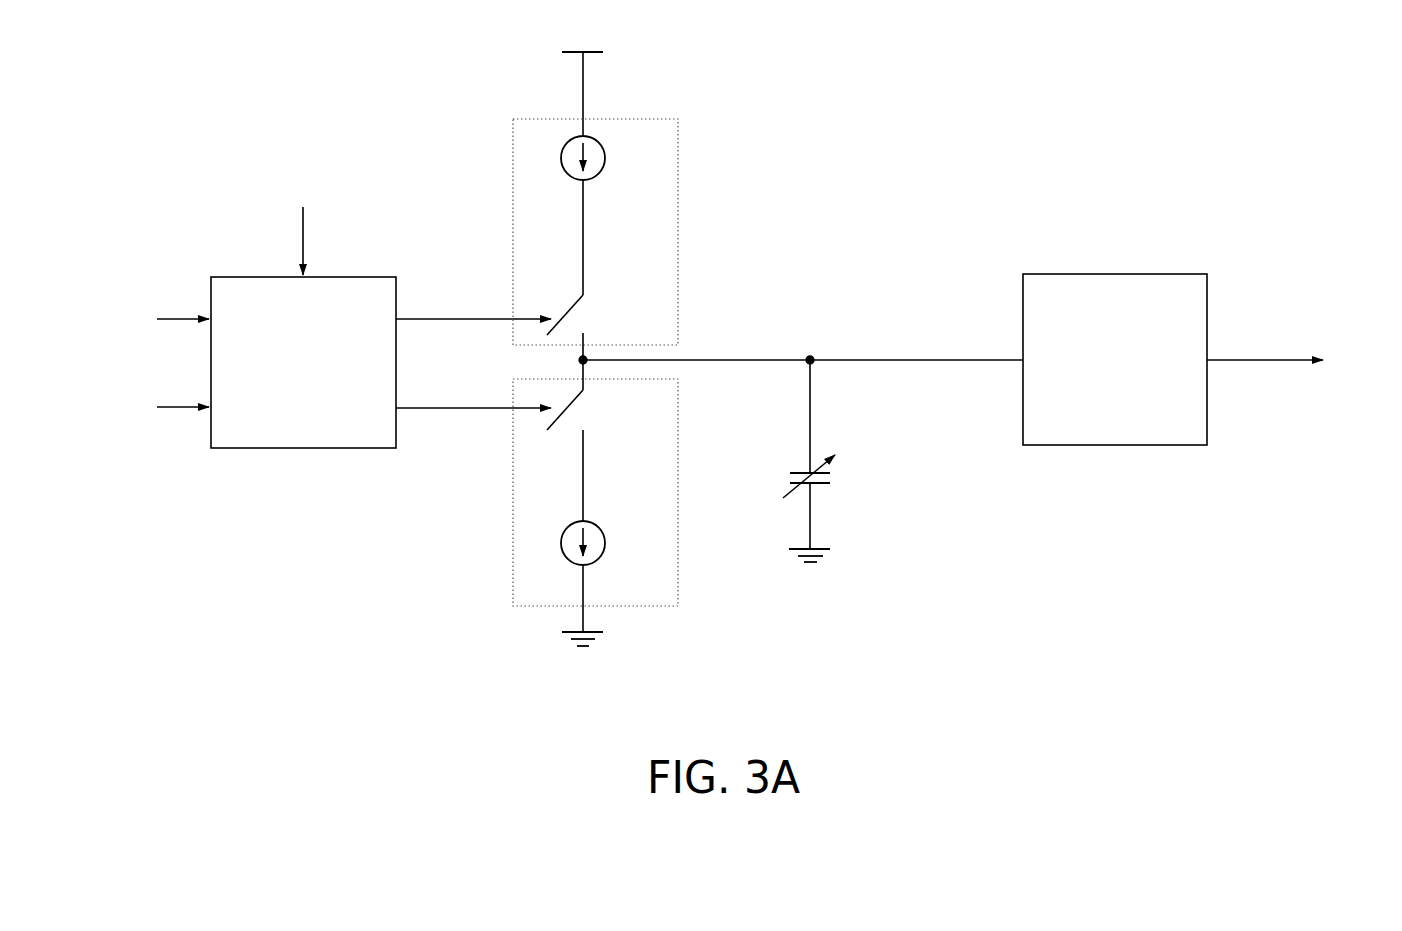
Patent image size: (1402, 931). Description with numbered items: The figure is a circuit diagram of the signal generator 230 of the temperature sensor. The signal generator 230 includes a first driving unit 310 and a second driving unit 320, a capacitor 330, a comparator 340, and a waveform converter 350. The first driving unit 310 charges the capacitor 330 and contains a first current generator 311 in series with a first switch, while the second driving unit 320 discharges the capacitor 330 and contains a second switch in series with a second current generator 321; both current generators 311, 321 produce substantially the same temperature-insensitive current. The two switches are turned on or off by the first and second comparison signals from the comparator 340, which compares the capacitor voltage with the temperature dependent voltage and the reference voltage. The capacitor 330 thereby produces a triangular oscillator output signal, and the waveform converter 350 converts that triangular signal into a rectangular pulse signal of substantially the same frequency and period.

The signal generator 230 is at (1230, 60).
The first driving unit 310 is at (642, 224).
The first current generator 311 is at (605, 148).
The second driving unit 320 is at (646, 503).
The second current generator 321 is at (604, 525).
The capacitor 330 is at (836, 475).
The comparator 340 is at (305, 449).
The waveform converter 350 is at (1113, 448).